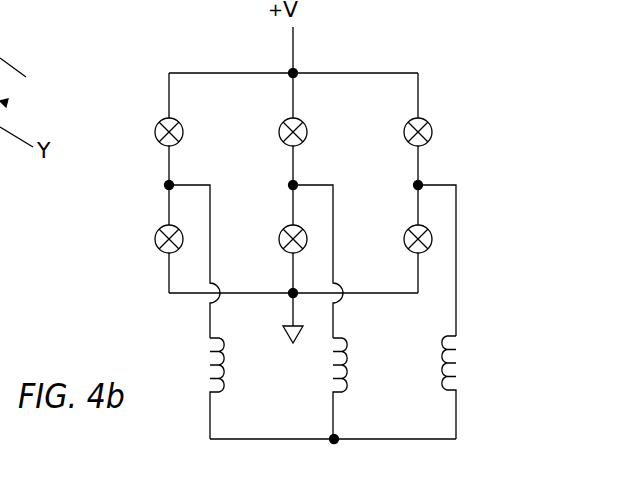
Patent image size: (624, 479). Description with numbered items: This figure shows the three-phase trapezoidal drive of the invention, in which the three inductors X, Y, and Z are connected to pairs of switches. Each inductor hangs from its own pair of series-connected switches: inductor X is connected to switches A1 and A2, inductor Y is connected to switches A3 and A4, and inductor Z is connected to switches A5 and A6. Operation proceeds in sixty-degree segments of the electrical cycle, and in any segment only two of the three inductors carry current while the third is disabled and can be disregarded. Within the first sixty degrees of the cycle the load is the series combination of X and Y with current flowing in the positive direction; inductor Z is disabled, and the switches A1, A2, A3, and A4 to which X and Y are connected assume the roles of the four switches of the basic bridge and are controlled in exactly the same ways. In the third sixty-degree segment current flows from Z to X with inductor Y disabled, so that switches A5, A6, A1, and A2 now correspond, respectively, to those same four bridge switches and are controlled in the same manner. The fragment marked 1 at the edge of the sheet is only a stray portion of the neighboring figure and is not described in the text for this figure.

The switch A1 is at (152, 134).
The switch A2 is at (150, 242).
The switch A3 is at (274, 134).
The switch A4 is at (274, 242).
The switch A5 is at (399, 134).
The switch A6 is at (399, 242).
The inductor X is at (230, 388).
The inductor Y is at (353, 388).
The inductor Z is at (460, 387).
The adjacent figure reference 1 is at (10, 105).